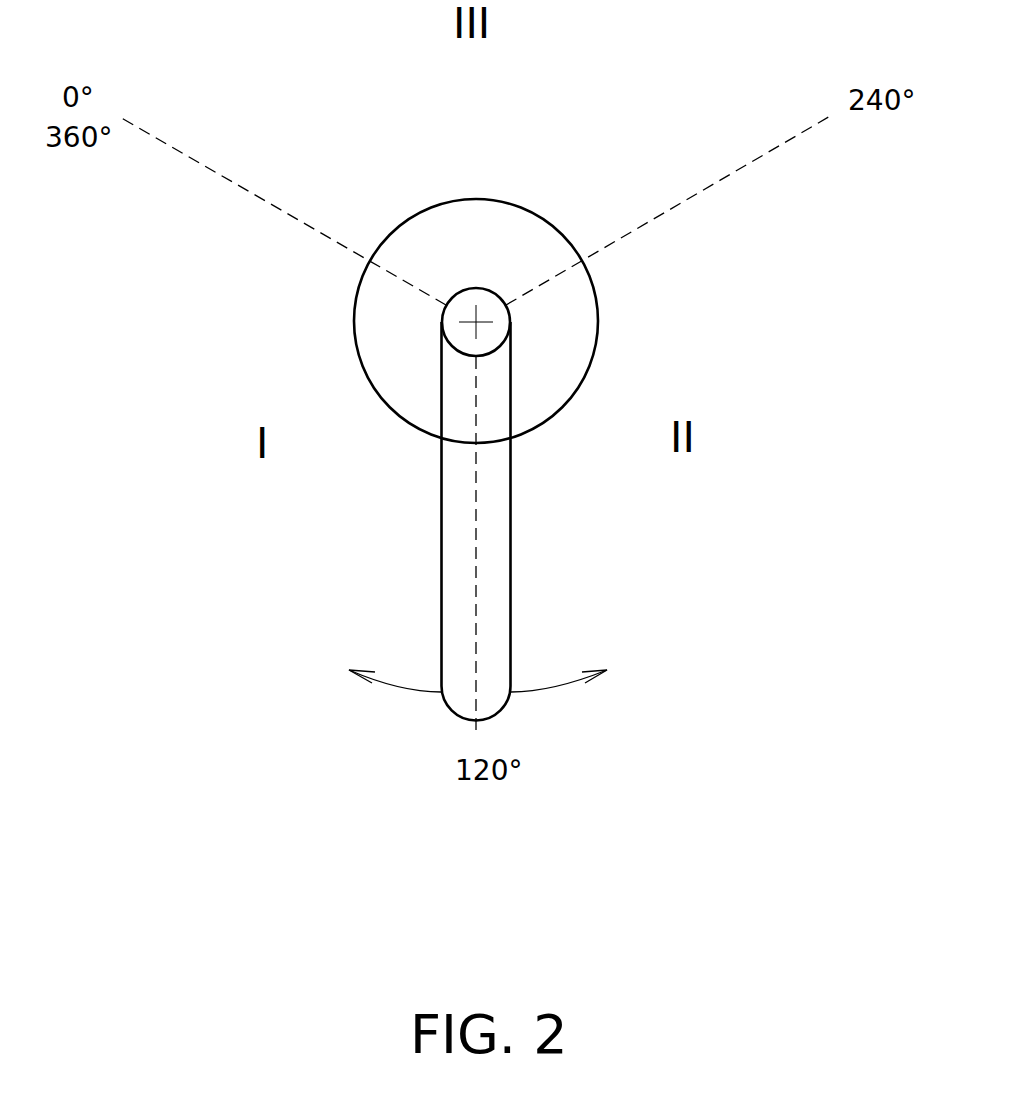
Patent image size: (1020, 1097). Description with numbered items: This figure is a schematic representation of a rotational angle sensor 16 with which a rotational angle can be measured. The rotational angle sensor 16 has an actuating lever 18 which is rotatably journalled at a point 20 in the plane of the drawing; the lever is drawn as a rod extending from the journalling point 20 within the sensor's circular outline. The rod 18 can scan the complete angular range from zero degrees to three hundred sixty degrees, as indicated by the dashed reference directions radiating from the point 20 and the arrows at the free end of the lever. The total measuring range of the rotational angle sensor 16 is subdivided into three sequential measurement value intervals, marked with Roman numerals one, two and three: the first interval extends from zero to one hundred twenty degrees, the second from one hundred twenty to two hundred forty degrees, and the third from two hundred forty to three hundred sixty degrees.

The rotational angle sensor 16 is at (545, 388).
The actuating lever 18 is at (458, 703).
The point 20 is at (480, 318).